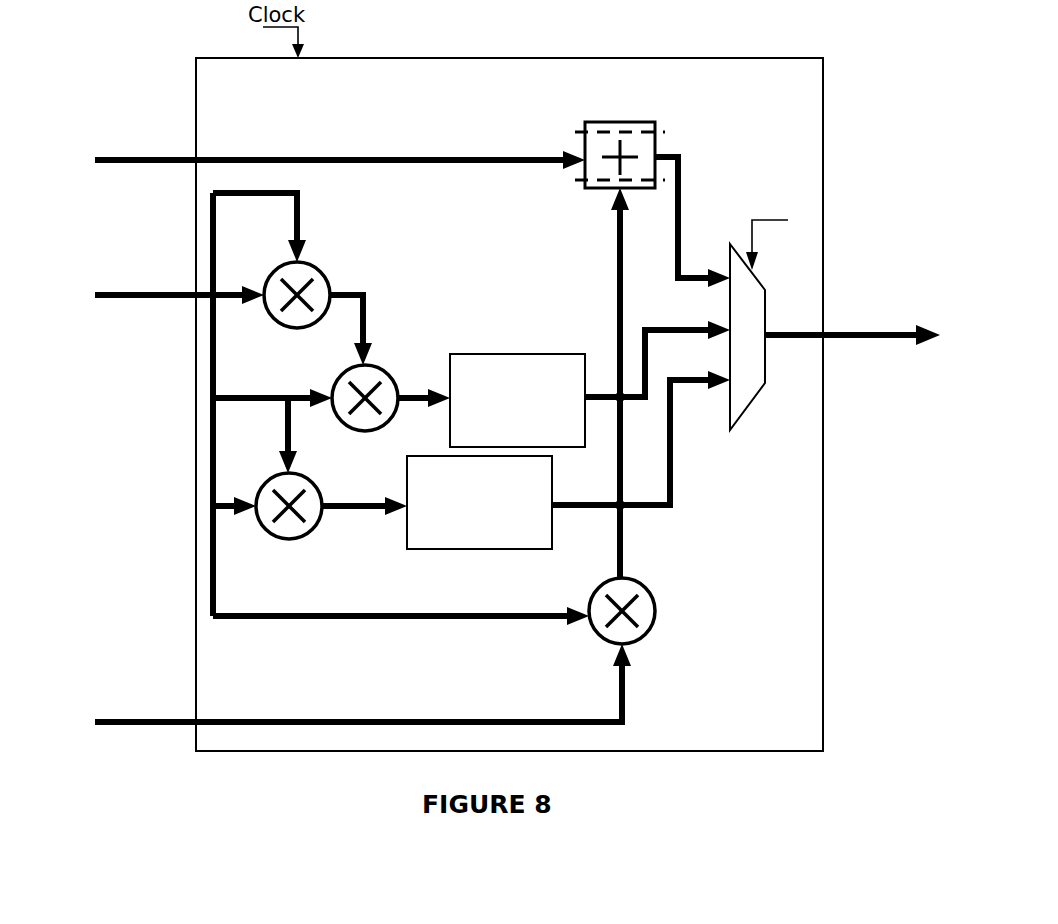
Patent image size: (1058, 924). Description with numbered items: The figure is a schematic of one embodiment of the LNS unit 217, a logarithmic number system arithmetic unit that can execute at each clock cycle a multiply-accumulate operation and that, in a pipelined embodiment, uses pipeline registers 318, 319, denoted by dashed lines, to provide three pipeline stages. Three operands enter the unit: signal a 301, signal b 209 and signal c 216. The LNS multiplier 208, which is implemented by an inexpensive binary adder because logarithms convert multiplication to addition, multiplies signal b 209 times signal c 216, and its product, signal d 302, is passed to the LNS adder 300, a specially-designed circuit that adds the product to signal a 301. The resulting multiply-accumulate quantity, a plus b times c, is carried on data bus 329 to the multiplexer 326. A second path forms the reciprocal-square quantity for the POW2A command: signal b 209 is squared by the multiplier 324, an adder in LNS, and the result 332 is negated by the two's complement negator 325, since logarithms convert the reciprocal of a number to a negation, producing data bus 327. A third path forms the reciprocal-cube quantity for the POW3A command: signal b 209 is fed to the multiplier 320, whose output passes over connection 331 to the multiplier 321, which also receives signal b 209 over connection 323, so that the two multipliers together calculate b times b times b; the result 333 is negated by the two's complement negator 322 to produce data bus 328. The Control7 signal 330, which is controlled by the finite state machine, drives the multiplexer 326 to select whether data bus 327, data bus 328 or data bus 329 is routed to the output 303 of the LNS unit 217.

The LNS unit 217 is at (172, 538).
The signal a 301 is at (336, 150).
The signal b 209 is at (176, 285).
The signal c 216 is at (363, 683).
The signal d 302 is at (608, 383).
The output 303 is at (852, 325).
The LNS adder 300 is at (593, 142).
The pipeline register 319 is at (657, 132).
The pipeline register 318 is at (577, 178).
The data bus 329 is at (683, 190).
The Control7 signal 330 is at (752, 232).
The multiplexer 326 is at (747, 397).
The multiplier 320 is at (300, 277).
The connection 331 is at (348, 283).
The multiplier 321 is at (370, 372).
The result 333 is at (408, 393).
The connection 323 is at (345, 395).
The two's complement negator 322 is at (468, 378).
The data bus 328 is at (695, 327).
The multiplier 324 is at (290, 528).
The result 332 is at (332, 498).
The two's complement negator 325 is at (441, 533).
The data bus 327 is at (673, 505).
The LNS multiplier 208 is at (628, 630).